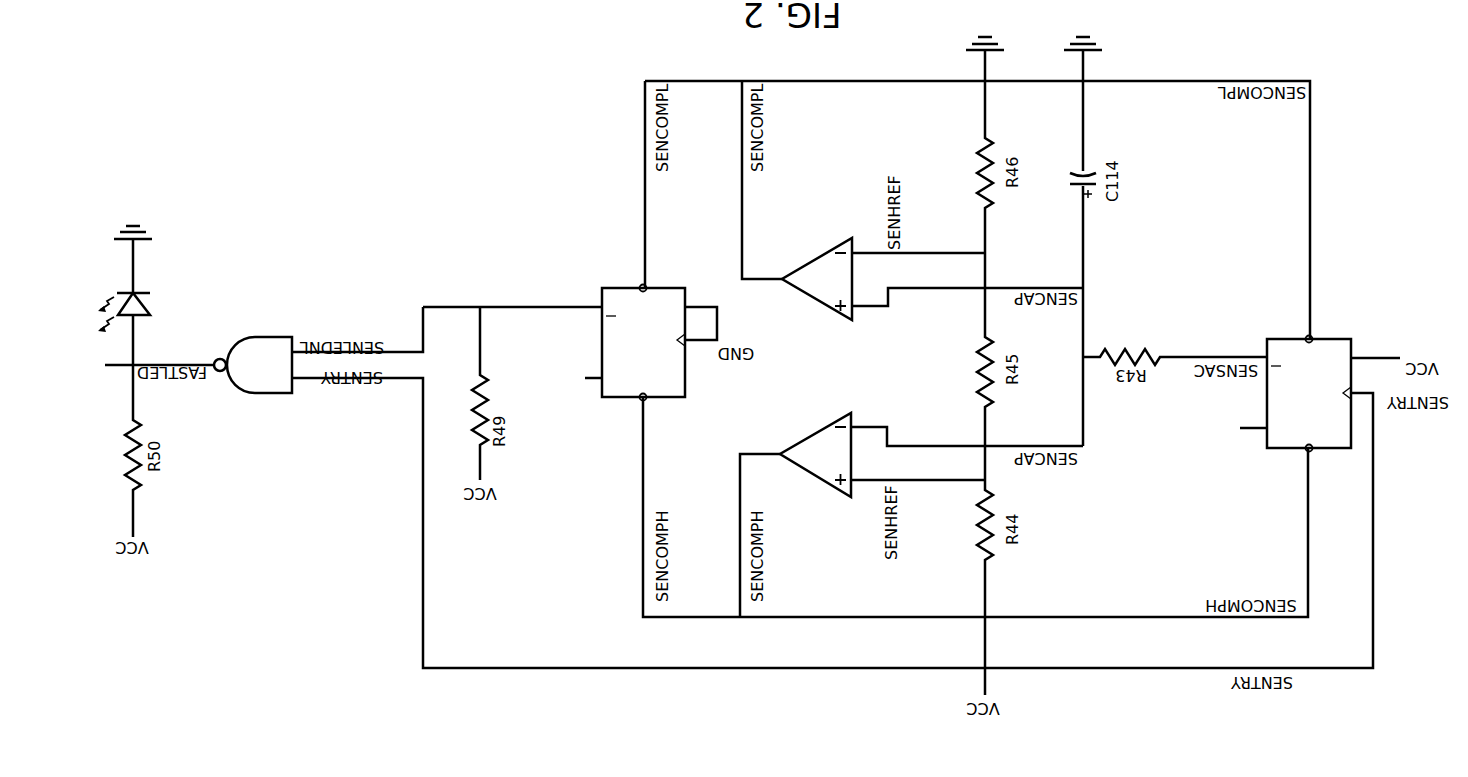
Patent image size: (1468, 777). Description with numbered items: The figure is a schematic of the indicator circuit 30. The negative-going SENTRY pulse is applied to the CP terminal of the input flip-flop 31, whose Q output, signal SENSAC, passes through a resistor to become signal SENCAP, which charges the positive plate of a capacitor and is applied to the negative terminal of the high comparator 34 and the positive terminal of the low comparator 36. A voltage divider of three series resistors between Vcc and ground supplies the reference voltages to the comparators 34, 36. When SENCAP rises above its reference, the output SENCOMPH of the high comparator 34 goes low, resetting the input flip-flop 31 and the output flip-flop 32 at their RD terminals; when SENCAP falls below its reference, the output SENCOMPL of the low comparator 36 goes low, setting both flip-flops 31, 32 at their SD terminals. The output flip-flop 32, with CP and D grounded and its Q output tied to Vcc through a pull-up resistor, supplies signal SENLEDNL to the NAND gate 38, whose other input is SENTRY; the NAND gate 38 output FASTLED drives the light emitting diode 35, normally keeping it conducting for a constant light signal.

The indicator circuit 30 is at (915, 702).
The input flip-flop 31 is at (1297, 456).
The output flip-flop 32 is at (632, 404).
The high comparator 34 is at (811, 466).
The light emitting diode 35 is at (146, 294).
The low comparator 36 is at (811, 257).
The NAND gate 38 is at (265, 402).